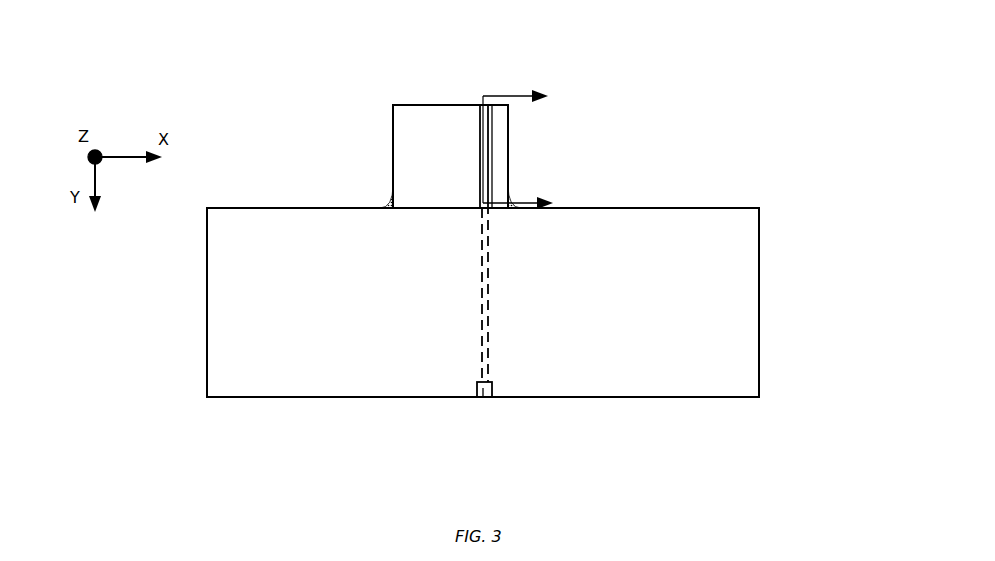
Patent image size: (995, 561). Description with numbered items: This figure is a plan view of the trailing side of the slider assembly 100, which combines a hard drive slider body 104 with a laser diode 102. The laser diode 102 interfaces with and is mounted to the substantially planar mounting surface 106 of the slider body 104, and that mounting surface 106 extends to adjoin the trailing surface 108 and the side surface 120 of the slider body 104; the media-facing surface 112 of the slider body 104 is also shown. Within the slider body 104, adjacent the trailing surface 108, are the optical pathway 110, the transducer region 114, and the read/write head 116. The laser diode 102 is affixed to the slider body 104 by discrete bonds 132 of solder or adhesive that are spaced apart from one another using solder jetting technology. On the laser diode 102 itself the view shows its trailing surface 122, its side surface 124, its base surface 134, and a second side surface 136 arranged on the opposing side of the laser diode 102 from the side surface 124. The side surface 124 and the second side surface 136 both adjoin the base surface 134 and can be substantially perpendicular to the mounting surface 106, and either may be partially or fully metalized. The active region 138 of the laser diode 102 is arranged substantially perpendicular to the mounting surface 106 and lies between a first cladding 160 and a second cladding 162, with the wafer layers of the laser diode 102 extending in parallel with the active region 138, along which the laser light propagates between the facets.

The slider assembly 100 is at (674, 92).
The laser diode 102 is at (528, 78).
The slider body 104 is at (714, 176).
The mounting surface 106 is at (620, 208).
The trailing surface 108 is at (433, 310).
The optical pathway 110 is at (488, 290).
The media-facing surface 112 is at (277, 397).
The transducer region 114 is at (475, 397).
The read/write head 116 is at (490, 397).
The side surface 120 is at (759, 297).
The trailing surface 122 is at (398, 123).
The side surface 124 is at (510, 170).
The discrete bonds 132 is at (517, 197).
The base surface 134 is at (425, 207).
The second side surface 136 is at (393, 145).
The active region 138 is at (470, 137).
The first cladding 160 is at (507, 137).
The second cladding 162 is at (443, 133).